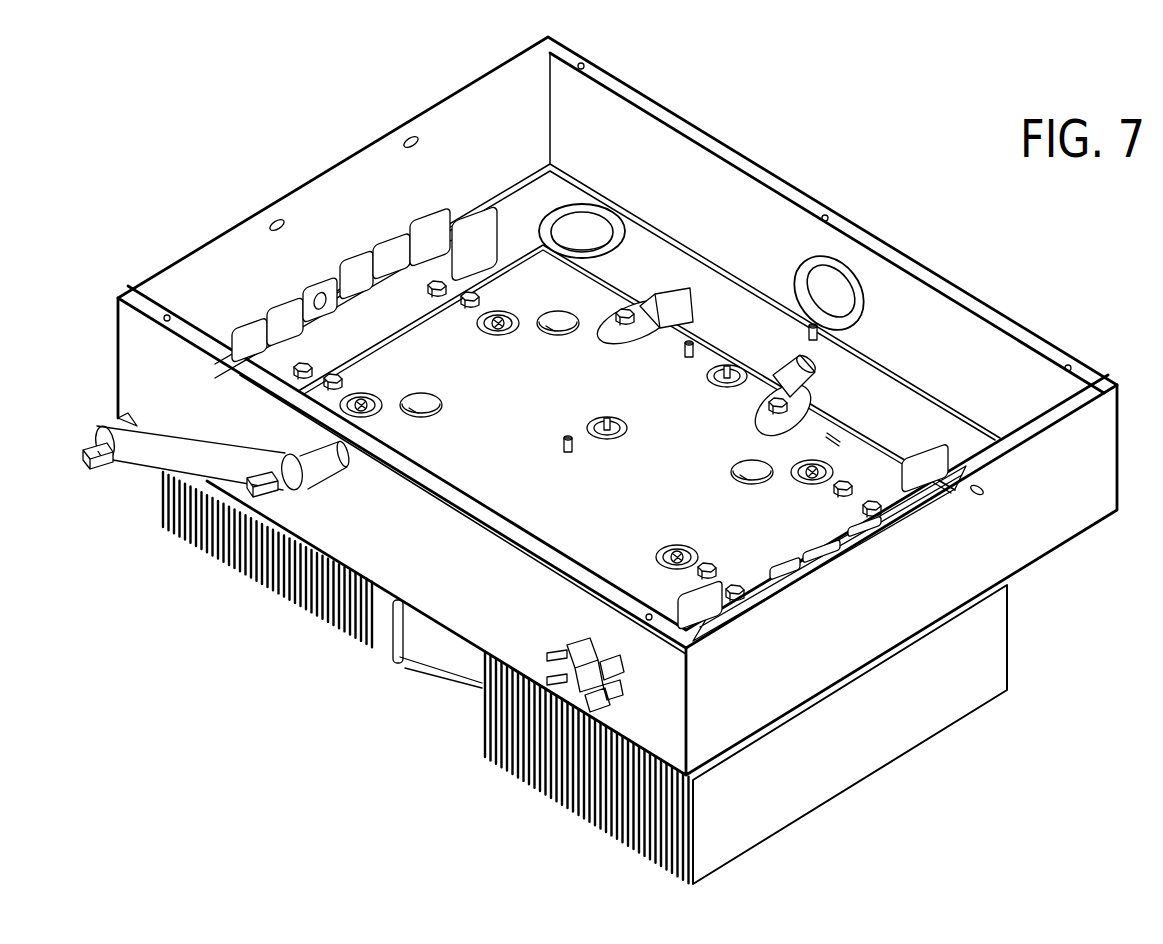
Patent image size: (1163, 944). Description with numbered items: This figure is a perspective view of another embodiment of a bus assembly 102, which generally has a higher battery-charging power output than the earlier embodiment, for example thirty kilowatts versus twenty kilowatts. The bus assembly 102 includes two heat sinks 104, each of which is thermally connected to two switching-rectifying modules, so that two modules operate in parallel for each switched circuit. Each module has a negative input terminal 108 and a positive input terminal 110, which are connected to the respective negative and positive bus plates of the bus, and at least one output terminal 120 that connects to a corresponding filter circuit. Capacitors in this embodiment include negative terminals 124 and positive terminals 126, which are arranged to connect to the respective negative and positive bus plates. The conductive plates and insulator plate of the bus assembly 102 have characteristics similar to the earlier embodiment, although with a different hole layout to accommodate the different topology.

The bus assembly 102 is at (792, 124).
The heat sink 104 is at (482, 717).
The negative input terminal 108 is at (462, 306).
The positive input terminal 110 is at (384, 419).
The output terminal 120 is at (360, 298).
The negative terminal 124 is at (684, 351).
The positive terminal 126 is at (720, 388).